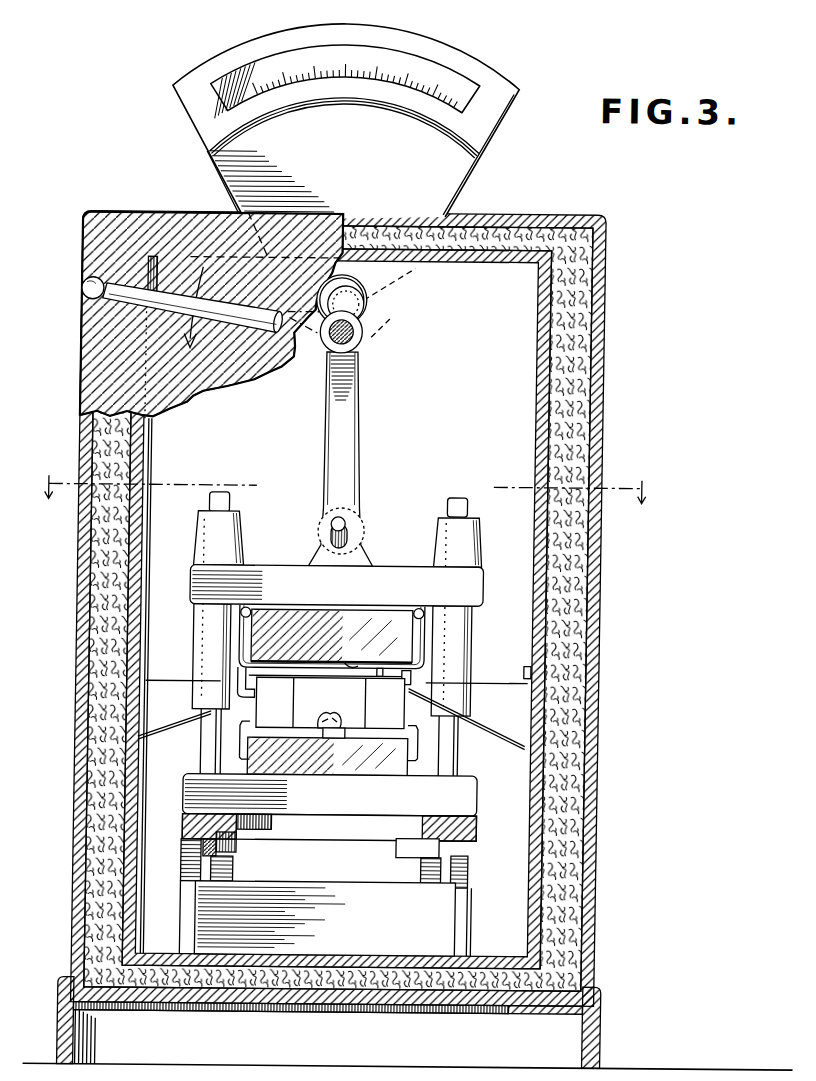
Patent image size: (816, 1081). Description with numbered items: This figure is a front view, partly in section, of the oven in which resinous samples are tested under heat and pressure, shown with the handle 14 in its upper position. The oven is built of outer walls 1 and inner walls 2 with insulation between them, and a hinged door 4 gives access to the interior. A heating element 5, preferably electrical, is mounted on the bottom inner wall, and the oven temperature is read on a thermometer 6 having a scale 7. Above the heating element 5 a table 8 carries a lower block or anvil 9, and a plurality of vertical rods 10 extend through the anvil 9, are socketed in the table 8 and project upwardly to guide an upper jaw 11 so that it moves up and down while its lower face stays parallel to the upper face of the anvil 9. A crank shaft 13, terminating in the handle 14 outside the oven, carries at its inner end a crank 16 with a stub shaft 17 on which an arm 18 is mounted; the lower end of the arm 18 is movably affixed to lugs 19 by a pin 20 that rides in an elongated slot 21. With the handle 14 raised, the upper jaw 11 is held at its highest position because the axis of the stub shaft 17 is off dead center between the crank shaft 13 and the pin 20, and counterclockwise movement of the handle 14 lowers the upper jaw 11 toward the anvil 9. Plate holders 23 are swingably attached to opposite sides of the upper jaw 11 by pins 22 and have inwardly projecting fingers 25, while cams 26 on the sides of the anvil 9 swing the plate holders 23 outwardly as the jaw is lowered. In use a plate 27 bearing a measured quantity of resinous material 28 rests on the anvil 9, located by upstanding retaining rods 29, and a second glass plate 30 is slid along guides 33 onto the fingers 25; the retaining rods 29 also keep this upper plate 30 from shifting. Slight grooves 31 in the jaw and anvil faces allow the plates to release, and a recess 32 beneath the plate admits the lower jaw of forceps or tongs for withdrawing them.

The outer walls 1 is at (77, 449).
The inner walls 2 is at (147, 449).
The hinged door 4 is at (345, 491).
The heating element 5 is at (325, 894).
The thermometer 6 is at (355, 283).
The scale 7 is at (447, 80).
The table 8 is at (481, 826).
The lower block or anvil 9 is at (481, 793).
The vertical rods 10 is at (220, 493).
The upper jaw 11 is at (484, 585).
The crank shaft 13 is at (358, 332).
The handle 14 is at (80, 294).
The crank 16 is at (355, 302).
The stub shaft 17 is at (356, 307).
The arm 18 is at (356, 423).
The lugs 19 is at (320, 522).
The pin 20 is at (345, 524).
The elongated slot 21 is at (348, 545).
The pins 22 is at (248, 610).
The plate holders 23 is at (252, 643).
The inwardly projecting fingers 25 is at (262, 683).
The cams 26 is at (242, 745).
The plate 27 is at (383, 727).
The resinous material 28 is at (338, 716).
The retaining rods 29 is at (259, 702).
The second glass plate 30 is at (381, 668).
The grooves 31 is at (358, 665).
The recess 32 is at (347, 737).
The guides 33 is at (413, 675).